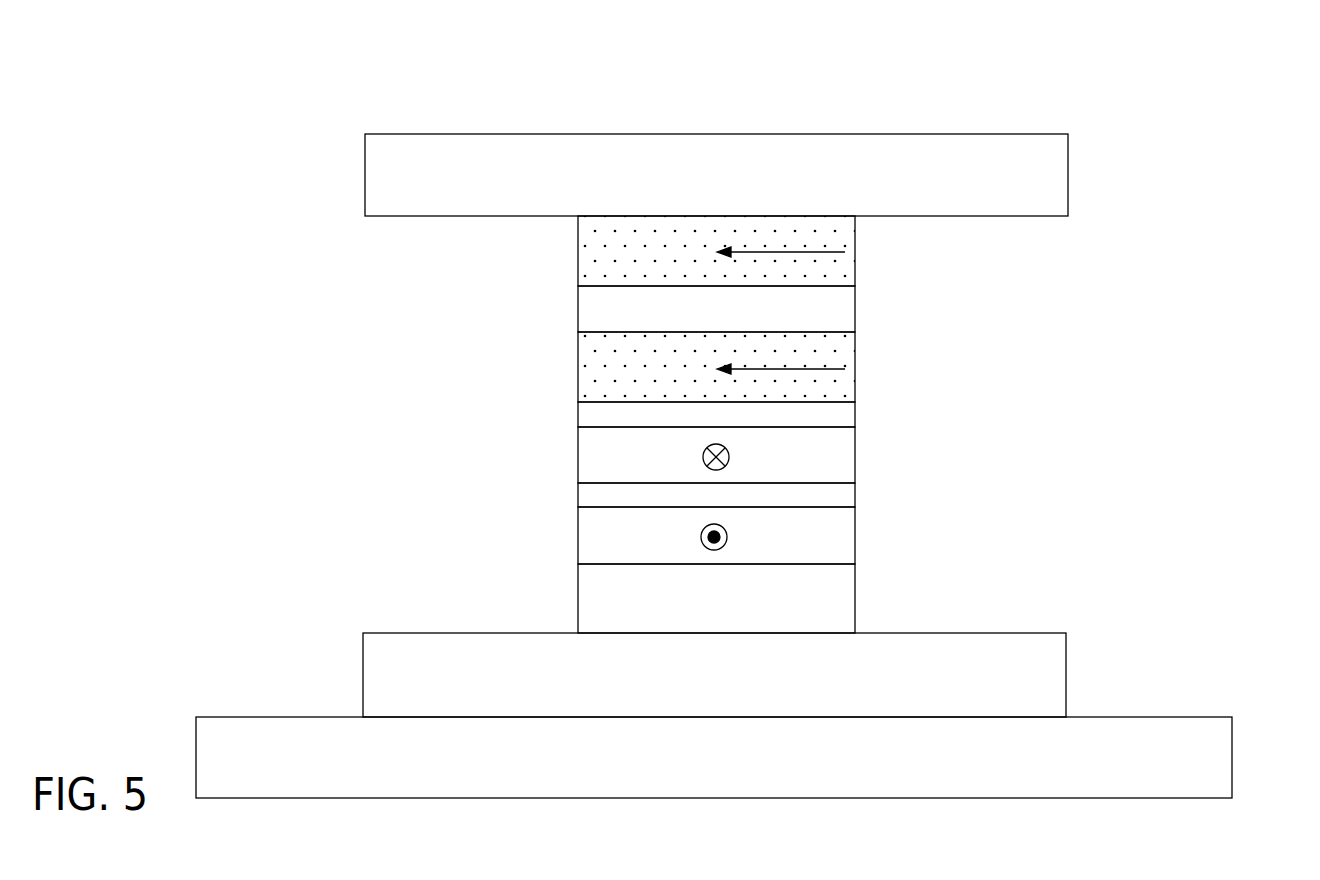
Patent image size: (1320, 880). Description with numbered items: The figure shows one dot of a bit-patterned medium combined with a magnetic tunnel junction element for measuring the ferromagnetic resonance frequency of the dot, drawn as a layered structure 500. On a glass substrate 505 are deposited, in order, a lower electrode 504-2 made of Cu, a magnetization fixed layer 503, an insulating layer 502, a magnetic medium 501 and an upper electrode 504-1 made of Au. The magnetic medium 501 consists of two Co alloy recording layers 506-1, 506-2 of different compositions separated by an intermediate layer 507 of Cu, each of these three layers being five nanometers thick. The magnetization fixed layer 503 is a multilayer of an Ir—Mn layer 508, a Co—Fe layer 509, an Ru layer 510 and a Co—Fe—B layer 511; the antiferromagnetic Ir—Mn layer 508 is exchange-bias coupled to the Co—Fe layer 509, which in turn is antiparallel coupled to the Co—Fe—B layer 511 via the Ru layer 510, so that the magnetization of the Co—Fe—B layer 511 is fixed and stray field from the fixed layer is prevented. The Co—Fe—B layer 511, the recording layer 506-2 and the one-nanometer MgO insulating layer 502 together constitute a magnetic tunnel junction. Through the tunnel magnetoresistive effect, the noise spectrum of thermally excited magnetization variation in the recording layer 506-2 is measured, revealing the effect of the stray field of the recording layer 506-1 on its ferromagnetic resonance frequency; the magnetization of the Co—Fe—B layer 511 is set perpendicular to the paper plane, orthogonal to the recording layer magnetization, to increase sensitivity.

The layered structure 500 is at (735, 99).
The magnetic medium 501 is at (868, 220).
The insulating layer 502 is at (845, 417).
The magnetization fixed layer 503 is at (868, 425).
The upper electrode 504-1 is at (1055, 186).
The lower electrode 504-2 is at (1050, 684).
The substrate 505 is at (1215, 761).
The recording layer 506-1 is at (578, 258).
The recording layer 506-2 is at (578, 369).
The intermediate layer 507 is at (578, 308).
The Ir—Mn layer 508 is at (578, 597).
The Co—Fe layer 509 is at (578, 537).
The Ru layer 510 is at (578, 495).
The Co—Fe—B layer 511 is at (578, 458).